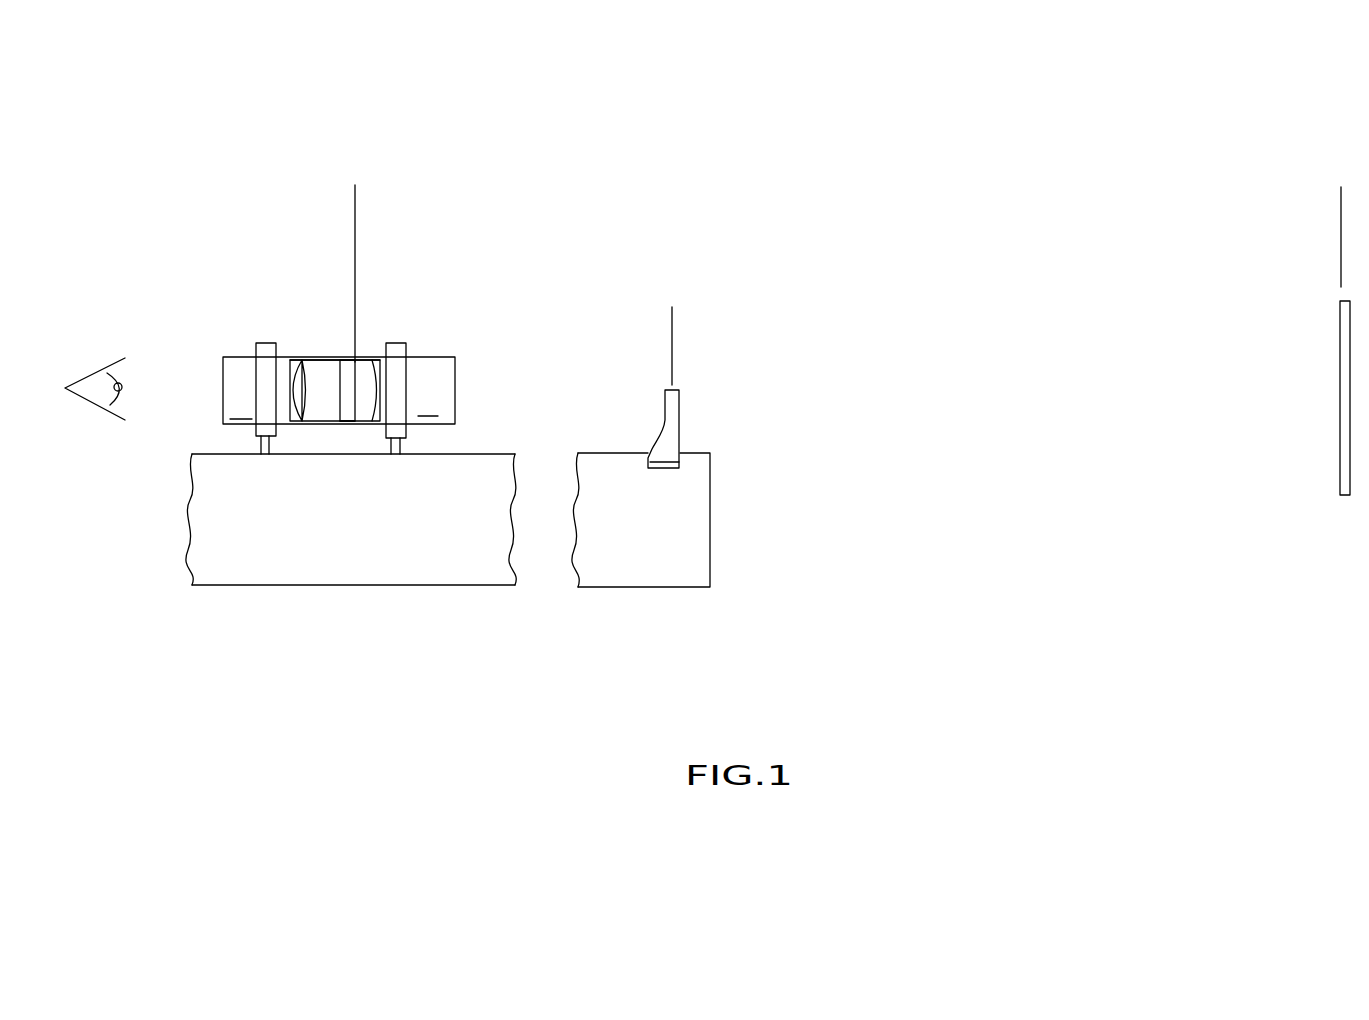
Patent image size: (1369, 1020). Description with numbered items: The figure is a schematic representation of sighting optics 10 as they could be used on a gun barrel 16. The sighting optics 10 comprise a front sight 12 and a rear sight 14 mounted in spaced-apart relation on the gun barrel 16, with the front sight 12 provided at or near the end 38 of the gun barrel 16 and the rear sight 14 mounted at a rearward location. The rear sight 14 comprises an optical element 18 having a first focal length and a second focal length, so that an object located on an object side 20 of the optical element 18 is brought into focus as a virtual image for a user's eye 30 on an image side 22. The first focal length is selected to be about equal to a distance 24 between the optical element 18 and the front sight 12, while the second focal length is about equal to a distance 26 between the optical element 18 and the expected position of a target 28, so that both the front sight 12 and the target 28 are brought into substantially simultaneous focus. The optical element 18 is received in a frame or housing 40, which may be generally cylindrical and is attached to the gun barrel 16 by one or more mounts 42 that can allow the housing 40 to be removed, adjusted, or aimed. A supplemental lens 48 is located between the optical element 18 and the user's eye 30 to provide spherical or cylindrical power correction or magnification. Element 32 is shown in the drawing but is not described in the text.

The sighting optics 10 is at (136, 134).
The front sight 12 is at (680, 422).
The rear sight 14 is at (470, 405).
The gun barrel 16 is at (338, 600).
The optical element 18 is at (347, 434).
The object side 20 is at (372, 421).
The image side 22 is at (340, 421).
The distance 24 is at (362, 322).
The distance 26 is at (1334, 223).
The target 28 is at (1325, 447).
The user's eye 30 is at (78, 413).
The beam splitter 32 is at (331, 360).
The end of gun barrel 38 is at (710, 507).
The housing 40 is at (240, 357).
The mounts 42 is at (265, 343).
The supplemental lens 48 is at (298, 399).